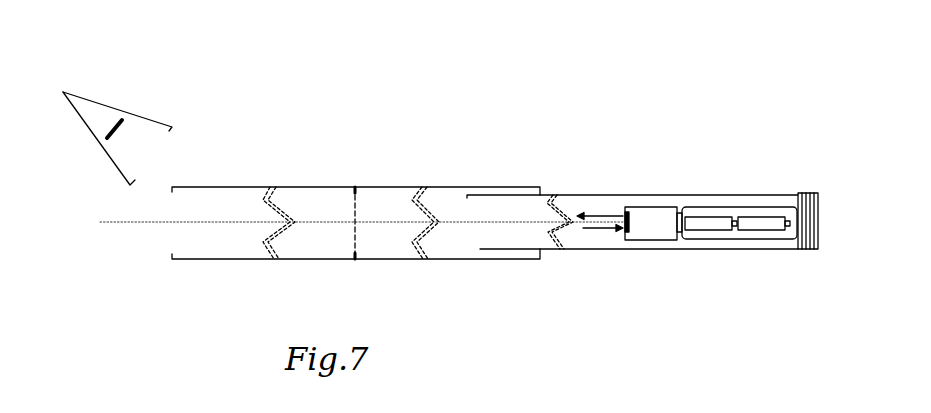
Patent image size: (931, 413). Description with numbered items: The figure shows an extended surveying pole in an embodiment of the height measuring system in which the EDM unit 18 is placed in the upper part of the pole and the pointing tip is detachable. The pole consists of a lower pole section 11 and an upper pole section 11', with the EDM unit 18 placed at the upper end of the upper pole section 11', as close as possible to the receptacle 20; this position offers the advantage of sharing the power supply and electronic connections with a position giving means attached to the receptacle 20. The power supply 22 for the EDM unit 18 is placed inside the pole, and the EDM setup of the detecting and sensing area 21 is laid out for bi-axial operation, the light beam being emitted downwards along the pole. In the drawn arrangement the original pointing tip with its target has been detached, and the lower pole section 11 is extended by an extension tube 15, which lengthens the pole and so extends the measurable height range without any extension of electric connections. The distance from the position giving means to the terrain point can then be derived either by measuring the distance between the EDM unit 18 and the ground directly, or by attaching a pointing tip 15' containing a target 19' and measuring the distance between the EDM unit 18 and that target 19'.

The lower pole section 11 is at (356, 202).
The upper pole section 11' is at (632, 202).
The extension tube 15 is at (309, 184).
The pointing tip 15' is at (117, 106).
The EDM unit 18 is at (662, 227).
The target 19' is at (83, 168).
The receptacle 20 is at (815, 225).
The detecting and sensing area 21 is at (627, 232).
The power supply 22 is at (742, 233).